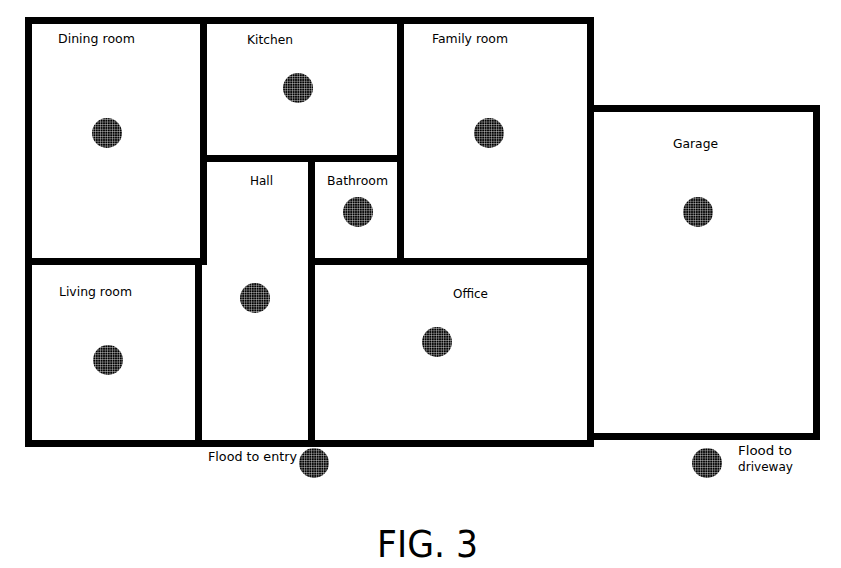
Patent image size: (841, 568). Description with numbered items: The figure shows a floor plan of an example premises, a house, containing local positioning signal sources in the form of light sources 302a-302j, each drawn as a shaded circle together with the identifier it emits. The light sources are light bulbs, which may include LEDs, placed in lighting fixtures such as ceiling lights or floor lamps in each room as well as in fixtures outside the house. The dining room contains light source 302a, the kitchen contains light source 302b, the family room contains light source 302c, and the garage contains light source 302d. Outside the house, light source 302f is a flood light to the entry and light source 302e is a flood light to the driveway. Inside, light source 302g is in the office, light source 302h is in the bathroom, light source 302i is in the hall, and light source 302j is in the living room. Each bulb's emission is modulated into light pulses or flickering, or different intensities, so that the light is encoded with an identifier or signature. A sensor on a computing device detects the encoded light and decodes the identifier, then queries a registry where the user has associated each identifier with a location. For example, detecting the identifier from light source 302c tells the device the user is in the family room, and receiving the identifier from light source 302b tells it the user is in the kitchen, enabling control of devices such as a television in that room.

The light source 302a is at (112, 120).
The light source 302b is at (313, 88).
The light source 302c is at (503, 126).
The light source 302d is at (704, 199).
The light source 302e is at (691, 462).
The light source 302f is at (329, 466).
The light source 302g is at (452, 339).
The light source 302h is at (352, 201).
The light source 302i is at (261, 285).
The light source 302j is at (112, 348).